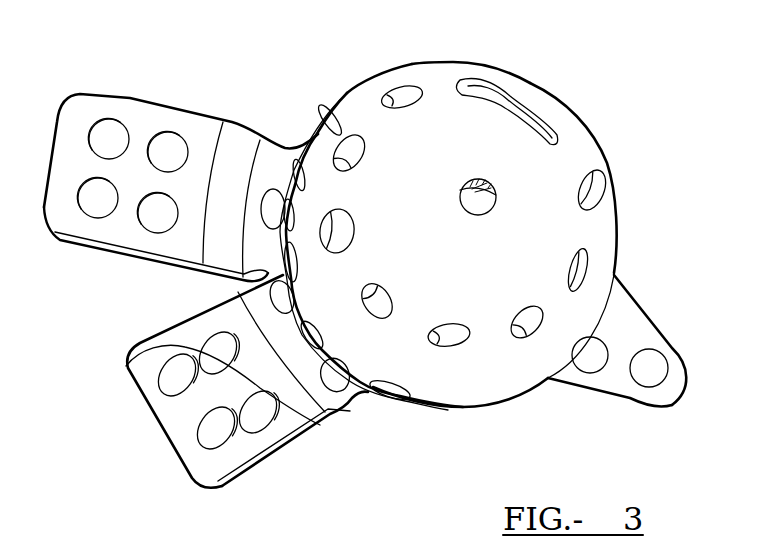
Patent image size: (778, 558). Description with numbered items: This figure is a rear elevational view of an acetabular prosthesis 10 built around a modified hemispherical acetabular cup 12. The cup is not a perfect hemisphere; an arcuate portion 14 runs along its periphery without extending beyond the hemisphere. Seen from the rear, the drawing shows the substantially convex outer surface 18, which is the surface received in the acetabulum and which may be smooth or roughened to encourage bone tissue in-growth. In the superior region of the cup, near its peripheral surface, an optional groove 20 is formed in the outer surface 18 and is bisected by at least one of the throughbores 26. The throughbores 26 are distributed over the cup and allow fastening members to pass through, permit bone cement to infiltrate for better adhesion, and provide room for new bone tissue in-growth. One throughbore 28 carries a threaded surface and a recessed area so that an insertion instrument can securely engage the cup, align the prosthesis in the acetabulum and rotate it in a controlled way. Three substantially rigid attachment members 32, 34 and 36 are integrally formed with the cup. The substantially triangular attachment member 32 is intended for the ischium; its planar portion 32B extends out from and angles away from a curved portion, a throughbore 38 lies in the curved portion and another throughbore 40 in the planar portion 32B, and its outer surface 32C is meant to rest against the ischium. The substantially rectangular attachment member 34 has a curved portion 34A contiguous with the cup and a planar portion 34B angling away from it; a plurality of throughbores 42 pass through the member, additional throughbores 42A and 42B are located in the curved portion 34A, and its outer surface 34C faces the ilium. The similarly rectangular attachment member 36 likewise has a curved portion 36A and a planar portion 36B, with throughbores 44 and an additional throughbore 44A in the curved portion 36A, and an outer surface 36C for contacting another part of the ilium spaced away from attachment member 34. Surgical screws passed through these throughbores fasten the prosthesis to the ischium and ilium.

The acetabular prosthesis 10 is at (618, 50).
The acetabular cup 12 is at (508, 405).
The arcuate portion 14 is at (475, 408).
The outer surface 18 is at (440, 92).
The groove 20 is at (350, 95).
The throughbores 26 is at (347, 118).
The throughbore 28 is at (490, 190).
The attachment member 32 is at (701, 380).
The planar portion 32B is at (628, 400).
The outer surface 32C is at (632, 322).
The attachment member 34 is at (150, 440).
The curved portion 34A is at (341, 410).
The planar portion 34B is at (277, 438).
The outer surface 34C is at (183, 334).
The attachment member 36 is at (42, 236).
The curved portion 36A is at (280, 150).
The planar portion 36B is at (160, 103).
The outer surface 36C is at (123, 230).
The throughbore 38 is at (587, 368).
The throughbore 40 is at (662, 358).
The throughbores 42 is at (240, 400).
The throughbore 42A is at (240, 288).
The throughbore 42B is at (362, 408).
The throughbores 44 is at (155, 194).
The throughbore 44A is at (260, 203).